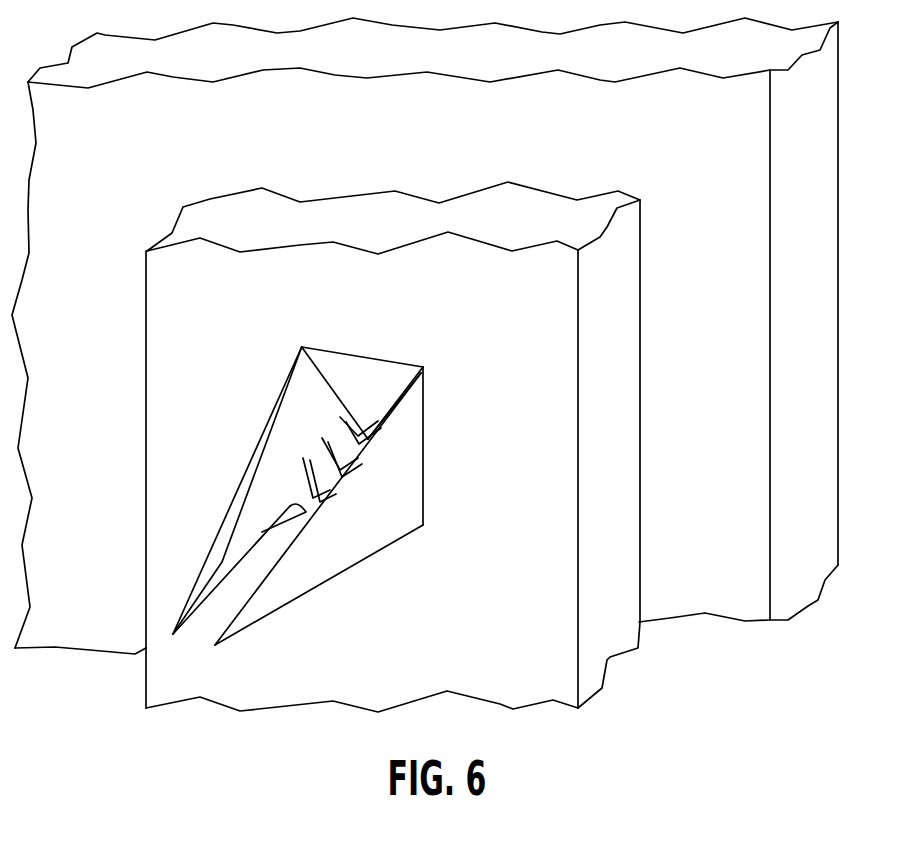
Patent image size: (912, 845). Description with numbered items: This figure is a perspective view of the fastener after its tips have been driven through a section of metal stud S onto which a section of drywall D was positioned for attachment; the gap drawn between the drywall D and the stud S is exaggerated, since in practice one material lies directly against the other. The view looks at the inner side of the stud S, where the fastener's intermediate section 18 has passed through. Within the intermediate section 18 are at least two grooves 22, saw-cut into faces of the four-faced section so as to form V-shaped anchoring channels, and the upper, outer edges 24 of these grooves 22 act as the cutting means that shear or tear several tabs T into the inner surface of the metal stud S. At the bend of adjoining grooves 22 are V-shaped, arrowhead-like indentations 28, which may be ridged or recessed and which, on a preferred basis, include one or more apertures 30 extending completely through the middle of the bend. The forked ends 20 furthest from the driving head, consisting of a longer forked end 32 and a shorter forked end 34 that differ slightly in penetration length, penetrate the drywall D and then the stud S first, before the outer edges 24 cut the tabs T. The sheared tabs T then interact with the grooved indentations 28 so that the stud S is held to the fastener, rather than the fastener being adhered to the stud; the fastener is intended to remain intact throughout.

The intermediate section 18 is at (383, 517).
The forked ends 20 is at (200, 640).
The grooves 22 is at (270, 490).
The upper, outer edges 24 is at (390, 408).
The indentations 28 is at (320, 478).
The apertures 30 is at (325, 500).
The longer forked end 32 is at (214, 557).
The shorter forked end 34 is at (293, 579).
The tabs T is at (403, 375).
The metal stud S is at (393, 447).
The drywall D is at (425, 336).